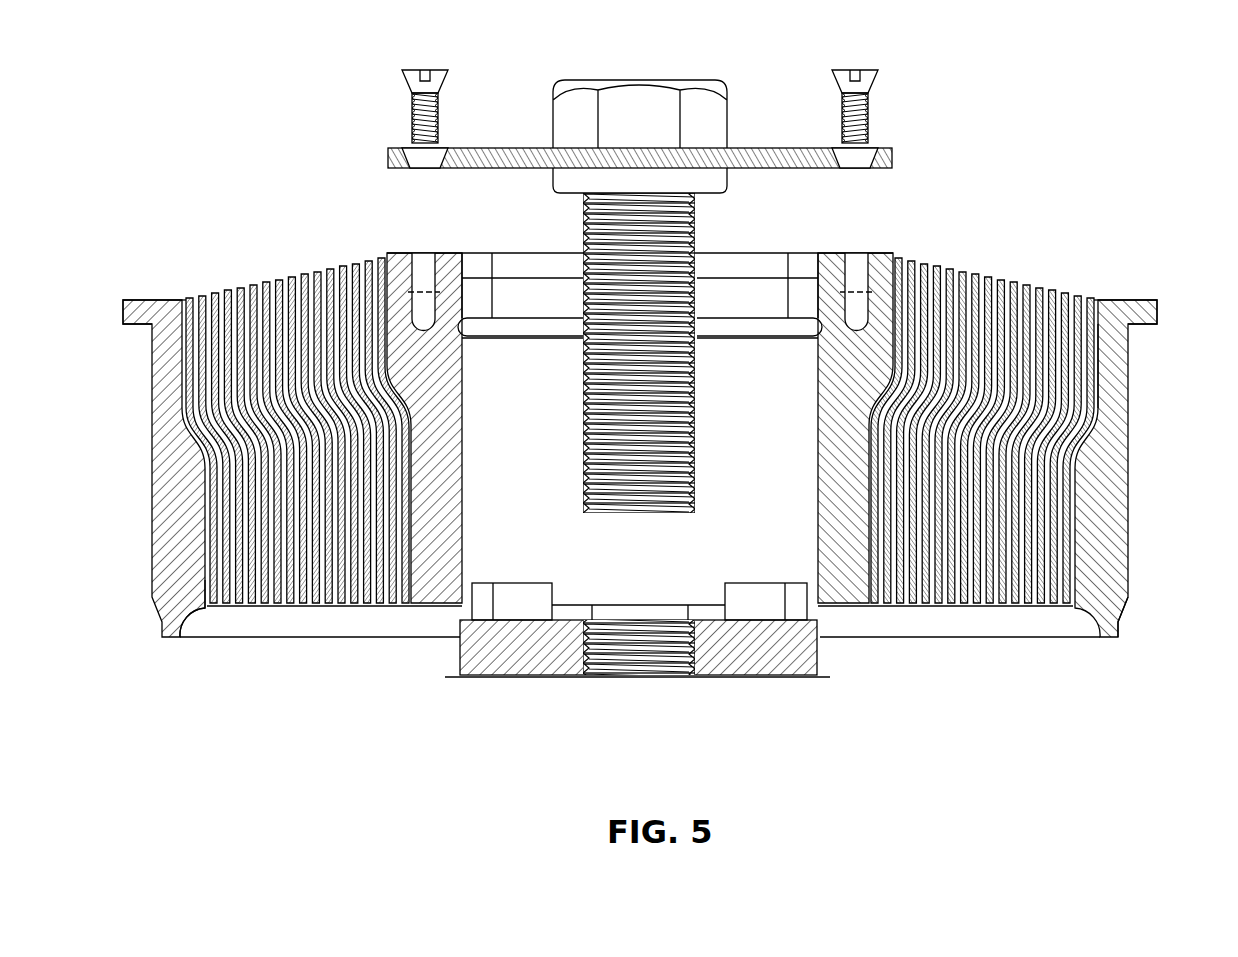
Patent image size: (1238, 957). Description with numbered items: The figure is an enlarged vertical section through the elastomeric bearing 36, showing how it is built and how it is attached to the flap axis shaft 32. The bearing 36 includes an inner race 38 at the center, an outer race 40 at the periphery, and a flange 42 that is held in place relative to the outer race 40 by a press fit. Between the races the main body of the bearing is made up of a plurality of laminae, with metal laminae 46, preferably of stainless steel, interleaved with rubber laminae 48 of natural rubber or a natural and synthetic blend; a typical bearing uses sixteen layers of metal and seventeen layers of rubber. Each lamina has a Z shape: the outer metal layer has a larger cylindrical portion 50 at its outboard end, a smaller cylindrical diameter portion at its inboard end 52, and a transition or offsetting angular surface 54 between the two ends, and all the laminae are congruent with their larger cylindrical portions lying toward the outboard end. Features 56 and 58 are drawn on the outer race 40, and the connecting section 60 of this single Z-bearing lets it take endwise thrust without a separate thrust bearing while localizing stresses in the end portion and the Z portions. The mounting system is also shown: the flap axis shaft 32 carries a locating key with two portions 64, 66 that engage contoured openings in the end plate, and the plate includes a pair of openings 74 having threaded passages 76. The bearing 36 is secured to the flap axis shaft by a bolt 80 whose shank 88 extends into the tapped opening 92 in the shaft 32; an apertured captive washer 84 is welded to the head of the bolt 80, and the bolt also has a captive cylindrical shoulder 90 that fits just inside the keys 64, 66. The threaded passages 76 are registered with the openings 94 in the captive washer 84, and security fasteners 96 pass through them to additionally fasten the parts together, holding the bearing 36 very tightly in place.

The flap axis shaft 32 is at (802, 694).
The bearing 36 is at (1056, 214).
The inner race 38 is at (440, 592).
The outer race 40 is at (1118, 535).
The flange 42 is at (140, 300).
The metal laminae 46 is at (190, 298).
The rubber laminae 48 is at (1095, 298).
The cylindrical portion 50 is at (190, 395).
The inboard end 52 is at (205, 585).
The transition or offsetting angular surface 54 is at (195, 480).
The inner surface of outer ring 56 is at (1102, 392).
The bottom edge of outer ring 58 is at (1127, 592).
The connecting section 60 is at (1075, 505).
The key portion 64 is at (735, 595).
The key portion 66 is at (527, 595).
The openings 74 is at (856, 248).
The threaded passages 76 is at (420, 262).
The bolt 80 is at (712, 110).
The captive washer 84 is at (532, 158).
The shank 88 is at (690, 212).
The captive cylindrical shoulder 90 is at (575, 186).
The tapped opening 92 is at (612, 668).
The openings 94 is at (410, 162).
The security fasteners 96 is at (868, 130).